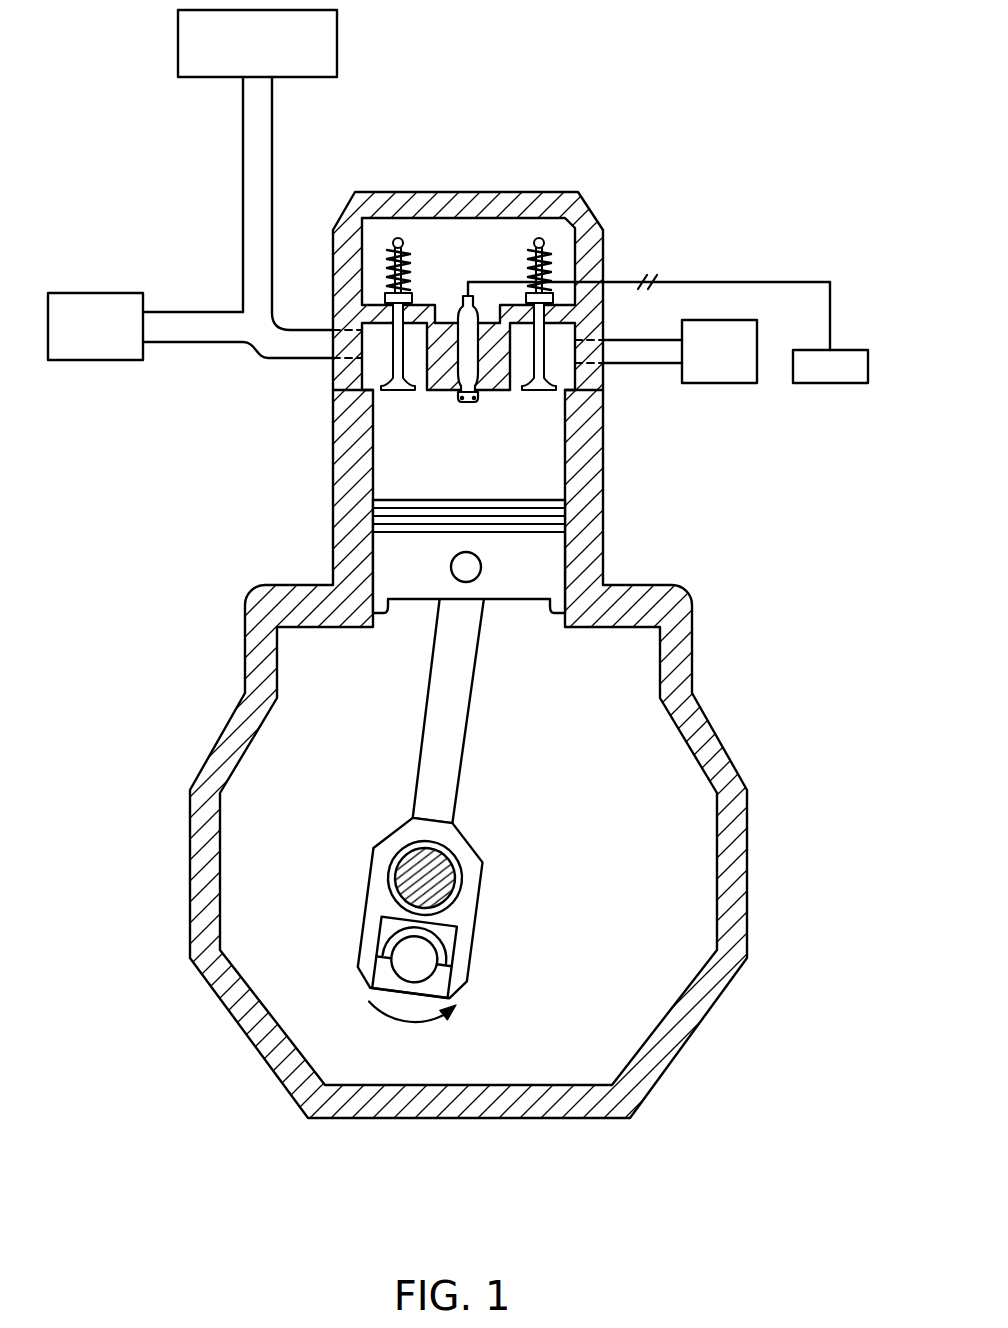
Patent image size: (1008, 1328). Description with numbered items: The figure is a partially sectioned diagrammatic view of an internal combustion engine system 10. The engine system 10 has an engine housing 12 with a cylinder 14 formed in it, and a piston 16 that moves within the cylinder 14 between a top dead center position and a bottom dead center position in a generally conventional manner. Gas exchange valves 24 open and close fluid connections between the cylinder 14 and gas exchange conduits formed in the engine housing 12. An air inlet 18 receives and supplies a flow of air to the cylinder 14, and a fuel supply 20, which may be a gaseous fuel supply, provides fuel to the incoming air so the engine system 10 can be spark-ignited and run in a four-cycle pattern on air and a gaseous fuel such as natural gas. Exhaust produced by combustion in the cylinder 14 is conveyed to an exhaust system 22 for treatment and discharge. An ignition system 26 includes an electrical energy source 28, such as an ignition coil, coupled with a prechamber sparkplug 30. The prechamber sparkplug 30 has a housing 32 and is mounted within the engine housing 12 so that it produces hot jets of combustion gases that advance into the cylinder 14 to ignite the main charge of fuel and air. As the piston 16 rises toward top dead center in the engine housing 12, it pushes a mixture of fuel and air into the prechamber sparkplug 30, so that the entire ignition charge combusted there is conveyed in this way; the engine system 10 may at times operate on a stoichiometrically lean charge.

The internal combustion engine system 10 is at (462, 564).
The engine housing 12 is at (719, 714).
The cylinder 14 is at (565, 452).
The piston 16 is at (398, 600).
The air inlet 18 is at (93, 361).
The fuel supply 20 is at (338, 37).
The exhaust system 22 is at (713, 384).
The gas exchange valves 24 is at (396, 392).
The ignition system 26 is at (843, 308).
The electrical energy source 28 is at (830, 384).
The prechamber sparkplug 30 is at (475, 342).
The housing 32 is at (474, 390).